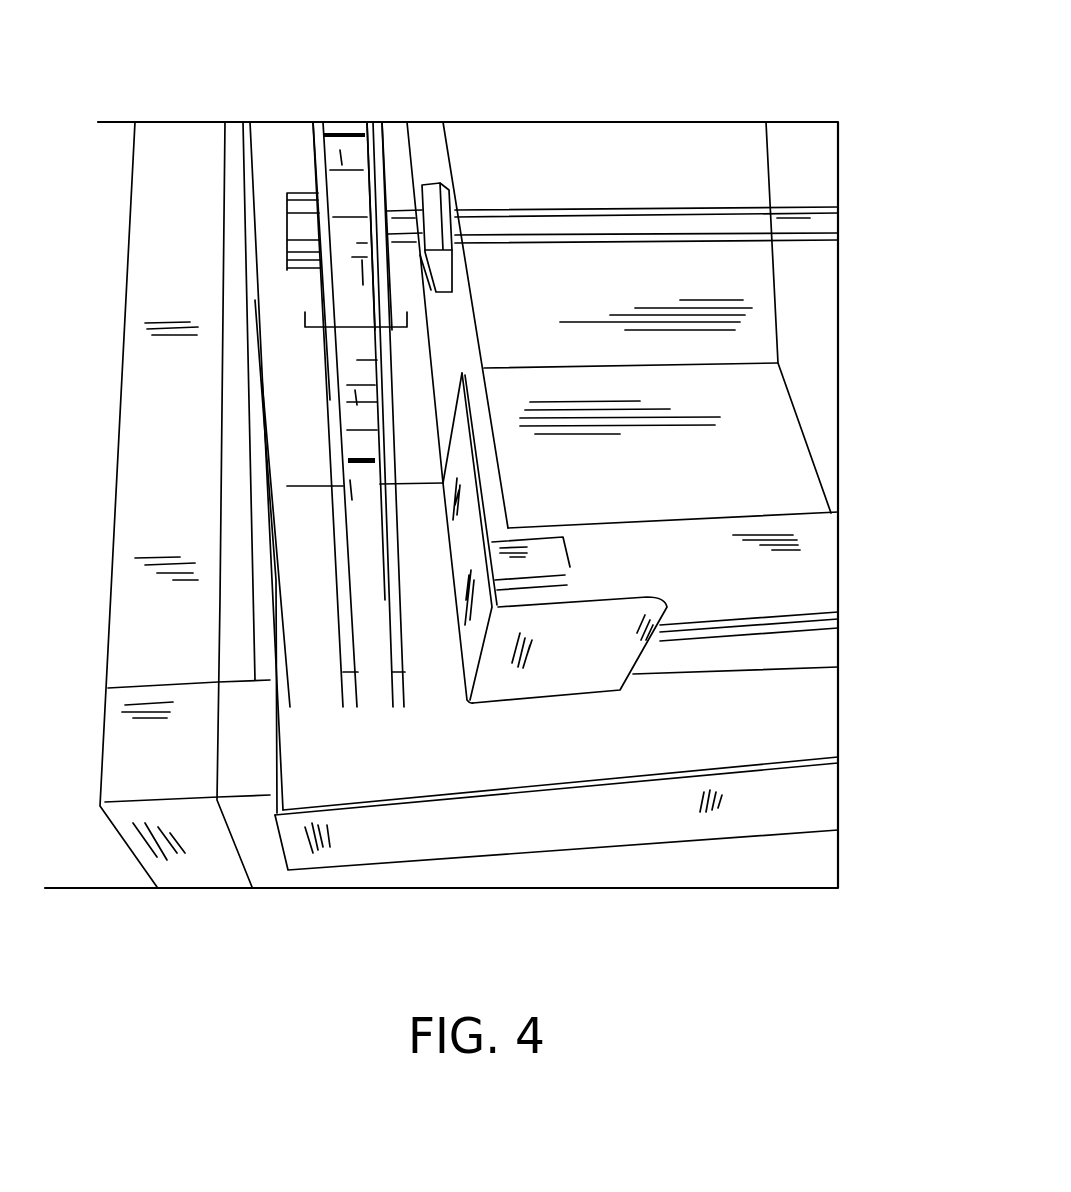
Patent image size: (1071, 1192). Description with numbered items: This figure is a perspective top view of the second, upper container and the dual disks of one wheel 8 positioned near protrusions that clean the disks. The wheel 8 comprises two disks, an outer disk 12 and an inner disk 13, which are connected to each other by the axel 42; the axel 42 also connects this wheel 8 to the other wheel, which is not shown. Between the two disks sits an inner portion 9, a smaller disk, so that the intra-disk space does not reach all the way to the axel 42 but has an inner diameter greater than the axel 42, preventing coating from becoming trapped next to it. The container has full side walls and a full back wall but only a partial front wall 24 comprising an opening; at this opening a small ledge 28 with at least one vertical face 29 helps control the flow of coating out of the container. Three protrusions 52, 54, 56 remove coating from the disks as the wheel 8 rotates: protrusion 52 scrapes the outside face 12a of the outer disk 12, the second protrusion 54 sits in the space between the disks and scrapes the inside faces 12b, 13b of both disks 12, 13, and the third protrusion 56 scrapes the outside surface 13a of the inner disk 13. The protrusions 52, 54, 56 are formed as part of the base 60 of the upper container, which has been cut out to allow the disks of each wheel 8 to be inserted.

The wheel 8 is at (357, 332).
The inner portion 9 is at (353, 207).
The outer disk 12 is at (347, 530).
The outside face of the outer disk 12a is at (313, 157).
The inside face of the outer disk 12b is at (338, 150).
The inner disk 13 is at (393, 543).
The outside surface of the inner disk 13a is at (387, 167).
The inside face of the inner disk 13b is at (372, 160).
The front wall 24 is at (665, 606).
The ledge 28 is at (803, 652).
The vertical face 29 is at (763, 631).
The axel 42 is at (775, 226).
The protrusion 52 is at (307, 557).
The second protrusion 54 is at (372, 517).
The third protrusion 56 is at (427, 500).
The base of the upper container 60 is at (800, 730).